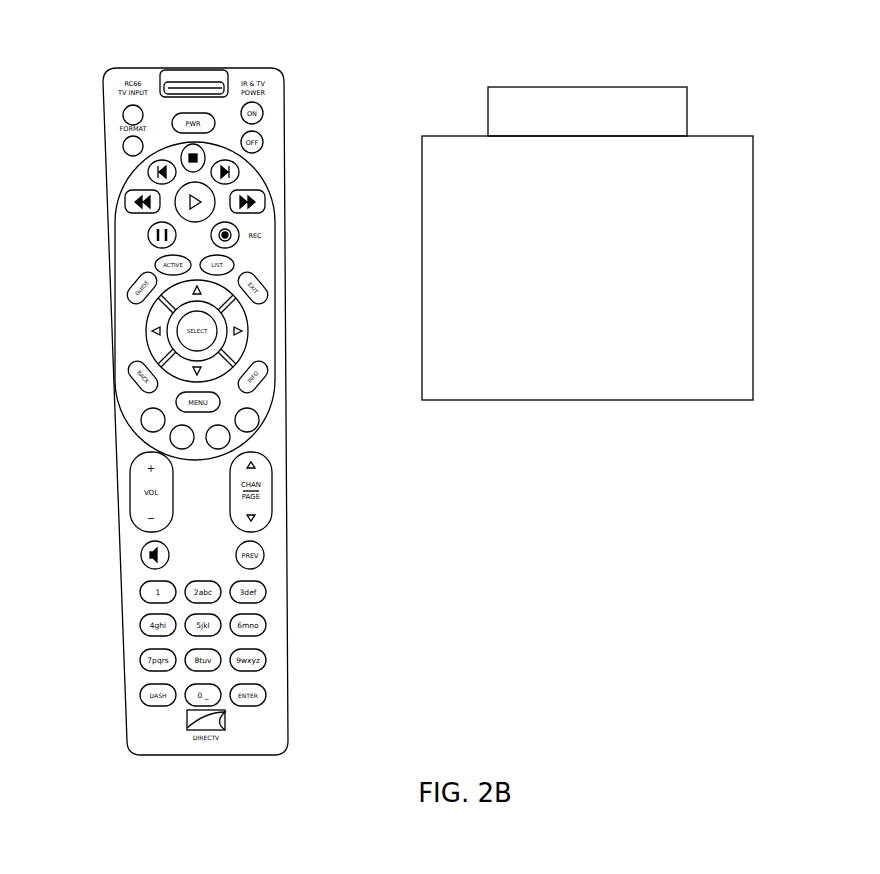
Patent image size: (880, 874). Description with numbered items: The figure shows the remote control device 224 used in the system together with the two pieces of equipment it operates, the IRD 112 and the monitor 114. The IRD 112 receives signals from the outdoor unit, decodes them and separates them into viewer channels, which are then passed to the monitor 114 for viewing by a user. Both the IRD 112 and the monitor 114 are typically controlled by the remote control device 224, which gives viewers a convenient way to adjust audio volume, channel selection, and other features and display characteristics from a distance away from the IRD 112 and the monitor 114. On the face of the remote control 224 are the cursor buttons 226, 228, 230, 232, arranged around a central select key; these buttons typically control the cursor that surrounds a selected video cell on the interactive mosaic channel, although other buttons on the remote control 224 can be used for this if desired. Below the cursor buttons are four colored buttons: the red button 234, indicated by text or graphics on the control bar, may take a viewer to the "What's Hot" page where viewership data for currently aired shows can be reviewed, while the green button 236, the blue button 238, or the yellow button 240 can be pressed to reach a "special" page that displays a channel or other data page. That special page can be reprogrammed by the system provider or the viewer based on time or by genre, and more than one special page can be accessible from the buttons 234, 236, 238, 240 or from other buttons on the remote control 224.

The remote control device 224 is at (190, 68).
The button 226 is at (215, 300).
The button 228 is at (245, 325).
The button 230 is at (193, 375).
The button 232 is at (155, 342).
The red button 234 is at (153, 420).
The green button 236 is at (183, 443).
The blue button 238 is at (247, 422).
The yellow button 240 is at (218, 437).
The IRD 112 is at (585, 87).
The monitor 114 is at (753, 268).